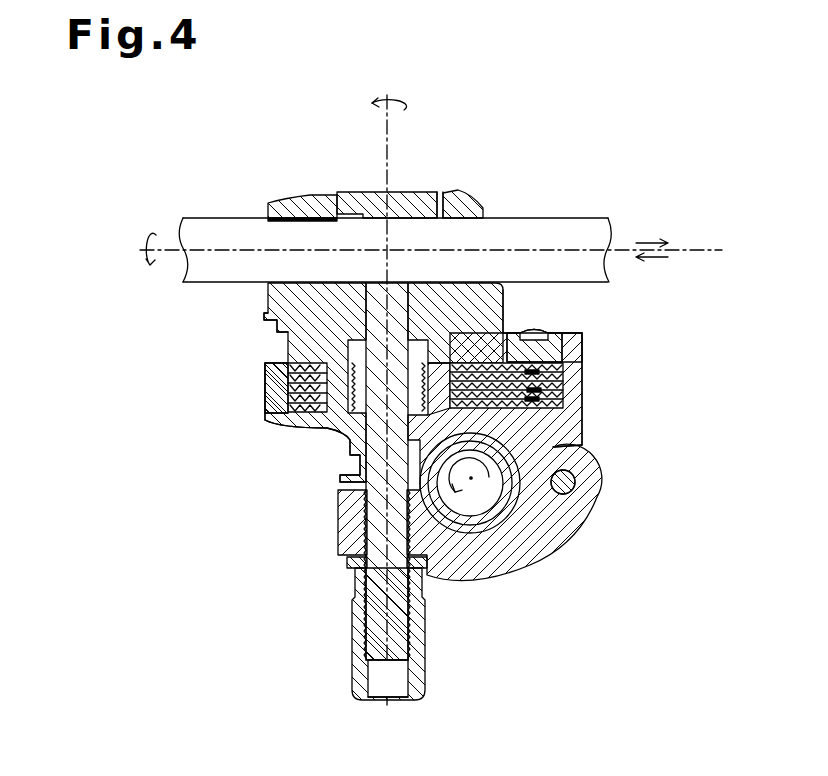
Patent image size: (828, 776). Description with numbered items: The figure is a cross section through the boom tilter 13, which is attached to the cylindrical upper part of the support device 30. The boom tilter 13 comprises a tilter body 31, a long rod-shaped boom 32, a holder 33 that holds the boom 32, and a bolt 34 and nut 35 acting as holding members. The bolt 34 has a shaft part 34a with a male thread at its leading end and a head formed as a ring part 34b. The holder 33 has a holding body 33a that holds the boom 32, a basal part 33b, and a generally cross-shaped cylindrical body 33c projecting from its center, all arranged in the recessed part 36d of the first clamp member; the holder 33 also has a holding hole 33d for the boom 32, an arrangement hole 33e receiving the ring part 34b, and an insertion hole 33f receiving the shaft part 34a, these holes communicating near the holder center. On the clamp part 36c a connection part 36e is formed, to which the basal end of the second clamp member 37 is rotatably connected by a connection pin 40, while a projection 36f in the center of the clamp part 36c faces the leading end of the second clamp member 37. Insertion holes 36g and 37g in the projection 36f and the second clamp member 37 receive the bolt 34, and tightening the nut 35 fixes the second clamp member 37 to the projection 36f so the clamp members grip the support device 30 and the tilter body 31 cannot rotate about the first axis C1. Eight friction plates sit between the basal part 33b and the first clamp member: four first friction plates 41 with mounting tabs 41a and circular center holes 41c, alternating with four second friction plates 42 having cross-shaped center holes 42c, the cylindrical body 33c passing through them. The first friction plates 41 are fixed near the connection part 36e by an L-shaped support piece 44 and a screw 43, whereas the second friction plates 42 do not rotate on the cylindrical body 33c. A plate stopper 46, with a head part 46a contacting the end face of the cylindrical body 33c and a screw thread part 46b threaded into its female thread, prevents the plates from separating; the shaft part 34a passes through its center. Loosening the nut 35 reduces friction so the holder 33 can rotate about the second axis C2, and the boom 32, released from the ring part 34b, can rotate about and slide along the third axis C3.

The boom tilter 13 is at (402, 204).
The support device 30 is at (530, 527).
The tilter body 31 is at (583, 335).
The boom 32 is at (602, 218).
The holder 33 is at (297, 200).
The holding body 33a is at (468, 200).
The basal part 33b is at (483, 330).
The cylindrical body 33c is at (433, 397).
The holding hole 33d is at (280, 222).
The arrangement hole 33e is at (440, 193).
The insertion hole 33f is at (372, 315).
The bolt 34 is at (393, 195).
The shaft part 34a is at (366, 585).
The ring part 34b is at (352, 193).
The nut 35 is at (423, 610).
The clamp part 36c is at (585, 412).
The recessed part 36d is at (290, 340).
The connection part 36e is at (578, 452).
The projection 36f is at (330, 458).
The insertion hole 36g is at (365, 497).
The second clamp member 37 is at (523, 563).
The insertion hole 37g is at (368, 512).
The connection pin 40 is at (594, 503).
The first friction plate 41 is at (290, 366).
The mounting tab 41a is at (563, 365).
The center hole 41c is at (290, 415).
The second friction plate 42 is at (293, 385).
The center hole 42c is at (292, 406).
The screw 43 is at (543, 337).
The support piece 44 is at (582, 343).
The plate stopper 46 is at (337, 445).
The head part 46a is at (497, 415).
The screw thread part 46b is at (410, 380).
The first axis C1 is at (472, 484).
The second axis C2 is at (403, 128).
The third axis C3 is at (701, 245).